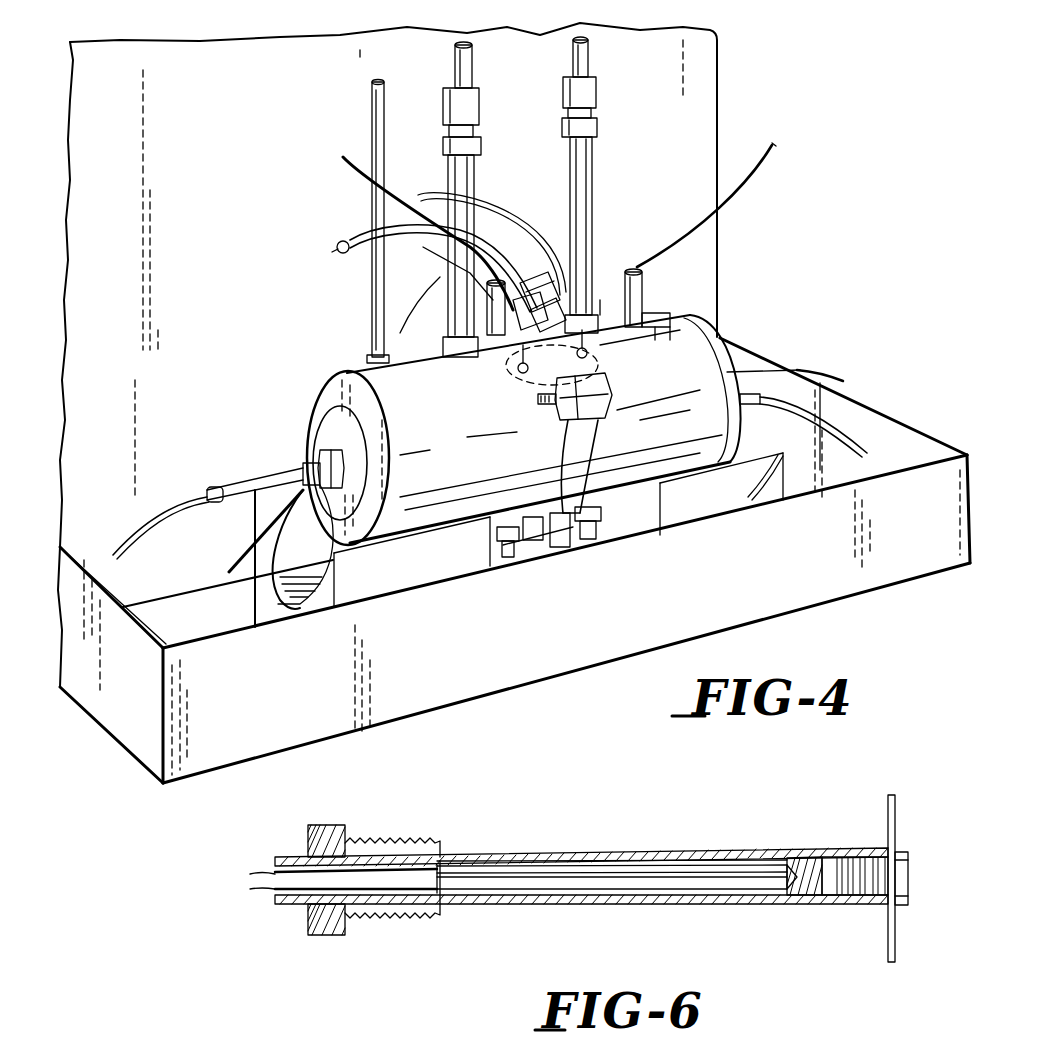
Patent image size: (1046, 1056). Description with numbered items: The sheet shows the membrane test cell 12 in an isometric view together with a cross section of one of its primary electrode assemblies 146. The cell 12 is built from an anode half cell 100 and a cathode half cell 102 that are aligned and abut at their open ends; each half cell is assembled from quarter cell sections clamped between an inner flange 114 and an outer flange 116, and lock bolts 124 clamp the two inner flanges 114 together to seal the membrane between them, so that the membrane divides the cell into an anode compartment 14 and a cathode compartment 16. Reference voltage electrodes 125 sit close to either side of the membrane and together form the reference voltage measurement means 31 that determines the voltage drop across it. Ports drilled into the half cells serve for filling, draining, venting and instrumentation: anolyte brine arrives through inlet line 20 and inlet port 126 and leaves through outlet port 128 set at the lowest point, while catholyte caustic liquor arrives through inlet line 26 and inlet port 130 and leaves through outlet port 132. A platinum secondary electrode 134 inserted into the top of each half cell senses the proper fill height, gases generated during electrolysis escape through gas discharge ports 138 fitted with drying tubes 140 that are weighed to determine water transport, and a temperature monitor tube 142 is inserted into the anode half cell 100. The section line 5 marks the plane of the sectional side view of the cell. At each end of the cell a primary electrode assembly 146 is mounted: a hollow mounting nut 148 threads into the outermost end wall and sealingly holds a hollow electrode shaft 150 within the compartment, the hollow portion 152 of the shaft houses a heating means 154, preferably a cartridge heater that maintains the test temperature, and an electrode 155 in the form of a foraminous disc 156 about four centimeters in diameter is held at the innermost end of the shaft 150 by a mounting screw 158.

In FIG. 4, the test cell 12 is at (632, 226).
In FIG. 4, the anode compartment 14 is at (433, 478).
In FIG. 4, the cathode compartment 16 is at (723, 467).
In FIG. 4, the inlet supply line 20 is at (401, 232).
In FIG. 4, the inlet supply line 26 is at (527, 255).
In FIG. 4, the reference voltage measurement means 31 is at (590, 356).
In FIG. 4, the section line 5 is at (345, 372).
In FIG. 4, the anode half cell 100 is at (517, 474).
In FIG. 4, the cathode half cell 102 is at (690, 428).
In FIG. 4, the inner flange 114 is at (598, 462).
In FIG. 4, the outer flange 116 is at (313, 402).
In FIG. 4, the lock bolts 124 is at (605, 392).
In FIG. 4, the reference voltage electrodes 125 is at (520, 372).
In FIG. 4, the inlet port 126 is at (563, 288).
In FIG. 4, the outlet port 128 is at (502, 548).
In FIG. 4, the inlet port 130 is at (600, 320).
In FIG. 4, the outlet port 132 is at (600, 527).
In FIG. 4, the secondary electrode 134 is at (640, 300).
In FIG. 4, the gas discharge ports 138 is at (605, 277).
In FIG. 4, the drying tube 140 is at (478, 103).
In FIG. 4, the temperature monitor tube 142 is at (372, 100).
In FIG. 4, the primary electrode assembly 146 is at (262, 478).
In FIG. 6, the primary electrode assembly 146 is at (505, 828).
In FIG. 4, the hollow mounting nut 148 is at (325, 460).
In FIG. 6, the hollow mounting nut 148 is at (322, 935).
In FIG. 6, the hollow electrode shaft 150 is at (645, 850).
In FIG. 6, the hollow portion 152 is at (688, 850).
In FIG. 6, the heating means 154 is at (470, 880).
In FIG. 6, the electrode 155 is at (575, 850).
In FIG. 6, the foraminous disc 156 is at (888, 820).
In FIG. 6, the mounting screw 158 is at (905, 840).